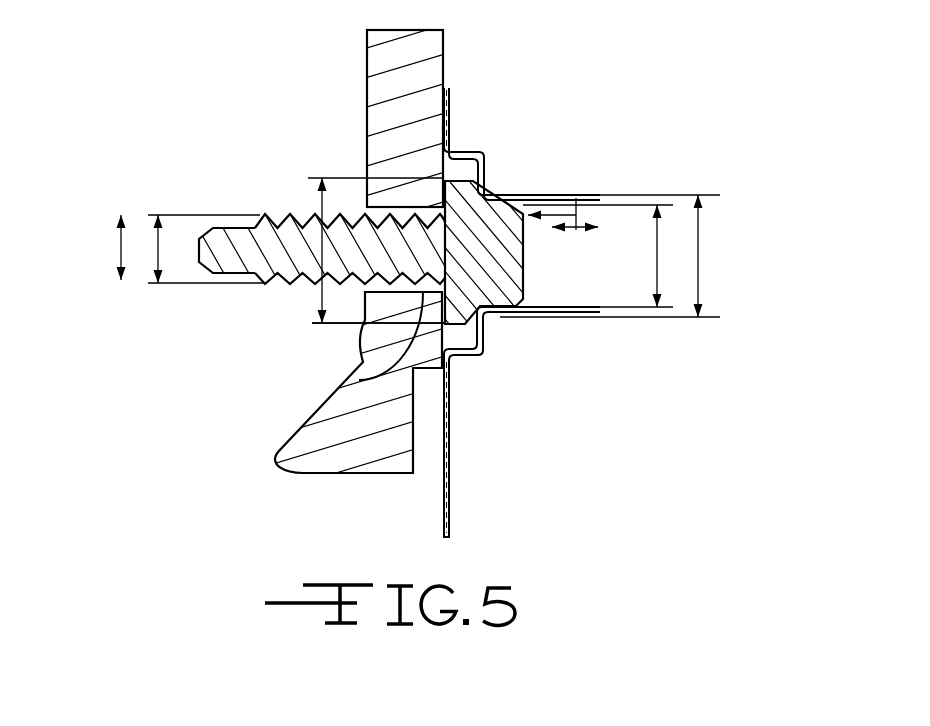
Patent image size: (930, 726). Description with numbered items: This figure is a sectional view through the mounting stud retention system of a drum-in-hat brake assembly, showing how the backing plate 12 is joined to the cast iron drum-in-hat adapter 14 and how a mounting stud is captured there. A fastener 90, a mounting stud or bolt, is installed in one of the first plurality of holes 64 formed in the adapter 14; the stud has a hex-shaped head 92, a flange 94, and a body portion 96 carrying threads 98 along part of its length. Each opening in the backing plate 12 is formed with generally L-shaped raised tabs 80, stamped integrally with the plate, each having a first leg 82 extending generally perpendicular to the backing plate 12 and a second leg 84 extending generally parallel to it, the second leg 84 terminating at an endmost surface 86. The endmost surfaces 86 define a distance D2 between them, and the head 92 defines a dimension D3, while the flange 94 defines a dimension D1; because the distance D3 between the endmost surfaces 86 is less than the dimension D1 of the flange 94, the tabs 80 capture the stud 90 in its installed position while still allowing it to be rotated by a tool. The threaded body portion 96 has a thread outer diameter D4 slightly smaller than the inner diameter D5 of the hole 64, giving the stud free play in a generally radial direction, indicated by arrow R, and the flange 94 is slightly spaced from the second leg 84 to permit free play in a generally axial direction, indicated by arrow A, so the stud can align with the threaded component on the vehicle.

The backing plate 12 is at (455, 496).
The drum-in-hat adapter 14 is at (362, 67).
The first plurality of holes 64 is at (424, 224).
The raised tabs 80 is at (522, 263).
The first leg 82 is at (463, 152).
The second leg 84 is at (485, 183).
The endmost surface 86 is at (492, 313).
The fastener 90 is at (577, 210).
The hex-shaped head 92 is at (526, 287).
The flange 94 is at (466, 201).
The body portion 96 is at (228, 275).
The threads 98 is at (280, 278).
The arrow A is at (576, 200).
The arrow R is at (120, 257).
The dimension D1 is at (318, 208).
The distance D2 is at (700, 272).
The dimension D3 is at (657, 268).
The thread outer diameter D4 is at (158, 246).
The inner diameter D5 is at (366, 362).